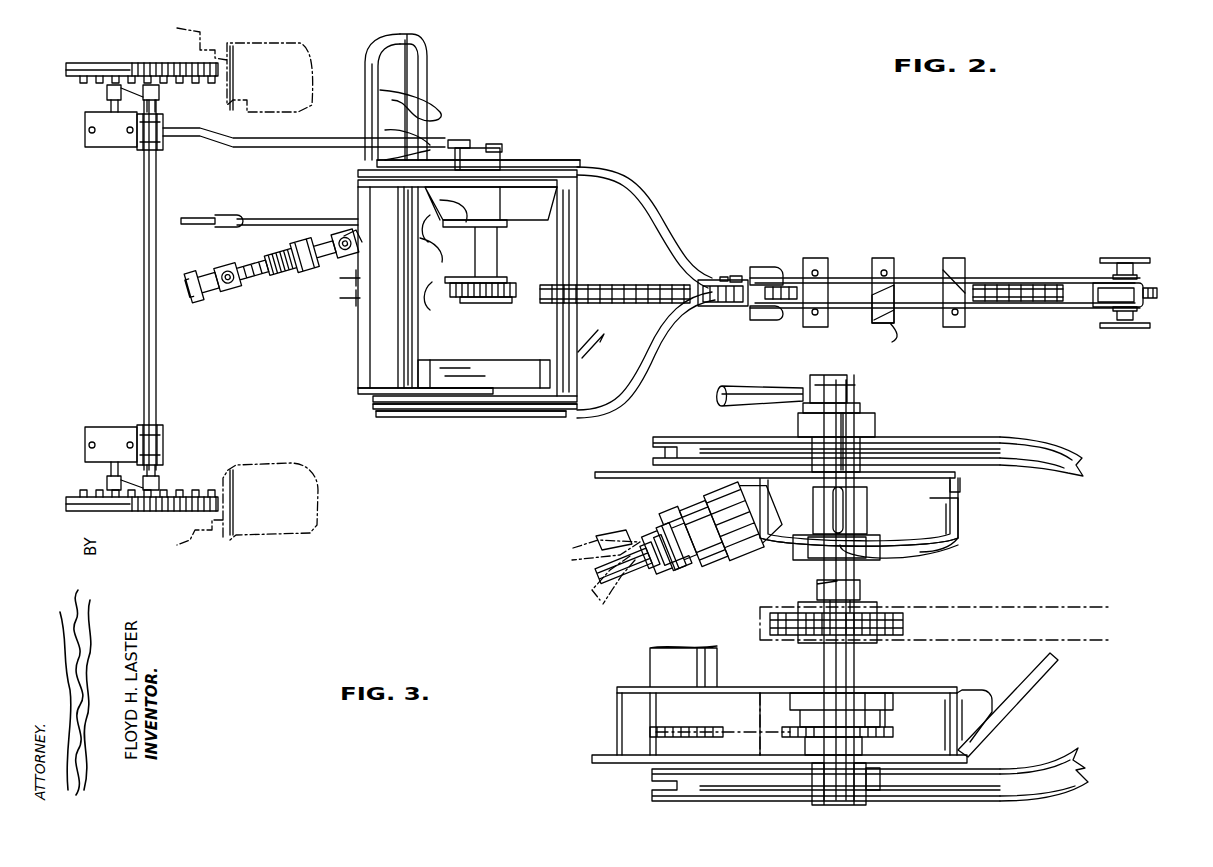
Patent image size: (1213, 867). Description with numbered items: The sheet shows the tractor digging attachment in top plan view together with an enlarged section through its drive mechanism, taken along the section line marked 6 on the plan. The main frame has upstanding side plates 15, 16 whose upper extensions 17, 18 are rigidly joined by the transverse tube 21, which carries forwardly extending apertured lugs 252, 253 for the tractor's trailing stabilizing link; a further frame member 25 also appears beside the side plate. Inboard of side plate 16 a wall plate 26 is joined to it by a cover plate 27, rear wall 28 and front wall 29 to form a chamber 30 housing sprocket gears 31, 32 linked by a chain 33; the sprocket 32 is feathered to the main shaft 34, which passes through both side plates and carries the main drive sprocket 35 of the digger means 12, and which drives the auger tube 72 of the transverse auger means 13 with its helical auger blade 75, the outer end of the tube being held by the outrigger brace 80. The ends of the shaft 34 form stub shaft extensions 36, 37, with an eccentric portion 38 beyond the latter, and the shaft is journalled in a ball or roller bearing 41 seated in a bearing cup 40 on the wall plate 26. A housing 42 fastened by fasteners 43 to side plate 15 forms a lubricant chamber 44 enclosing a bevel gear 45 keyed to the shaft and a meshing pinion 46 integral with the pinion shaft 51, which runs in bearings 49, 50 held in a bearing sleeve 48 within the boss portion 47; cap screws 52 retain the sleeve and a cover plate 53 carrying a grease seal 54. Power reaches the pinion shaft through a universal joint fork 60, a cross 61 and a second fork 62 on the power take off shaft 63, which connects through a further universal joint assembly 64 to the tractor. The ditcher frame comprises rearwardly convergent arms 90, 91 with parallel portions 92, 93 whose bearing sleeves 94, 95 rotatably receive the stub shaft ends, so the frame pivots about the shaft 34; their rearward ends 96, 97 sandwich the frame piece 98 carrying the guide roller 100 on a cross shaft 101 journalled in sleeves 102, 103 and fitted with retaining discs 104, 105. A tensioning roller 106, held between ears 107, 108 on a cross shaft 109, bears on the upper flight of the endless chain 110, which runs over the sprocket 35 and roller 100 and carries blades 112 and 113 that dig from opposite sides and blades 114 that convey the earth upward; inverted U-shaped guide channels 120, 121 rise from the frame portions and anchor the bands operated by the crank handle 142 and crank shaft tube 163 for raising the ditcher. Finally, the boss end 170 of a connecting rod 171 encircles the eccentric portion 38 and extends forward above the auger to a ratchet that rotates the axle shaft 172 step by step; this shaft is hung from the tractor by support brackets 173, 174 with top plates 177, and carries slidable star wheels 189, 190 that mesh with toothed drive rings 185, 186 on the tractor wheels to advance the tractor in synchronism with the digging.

In FIG. 2, the section line 6 is at (54, 152).
In FIG. 2, the digger means 12 is at (892, 249).
In FIG. 2, the transverse auger means 13 is at (434, 274).
In FIG. 2, the side plate 15 is at (514, 182).
In FIG. 3, the side plate 15 is at (912, 478).
In FIG. 2, the side plate 16 is at (522, 411).
In FIG. 3, the side plate 16 is at (918, 755).
In FIG. 2, the upper extension 17 is at (458, 180).
In FIG. 2, the upper extension 18 is at (450, 396).
In FIG. 2, the transversely extending tube or housing 21 is at (360, 352).
In FIG. 2, the brace bar 25 is at (598, 342).
In FIG. 3, the brace bar 25 is at (1050, 668).
In FIG. 2, the wall plate 26 is at (530, 360).
In FIG. 3, the wall plate 26 is at (900, 693).
In FIG. 2, the cover plate 27 is at (505, 360).
In FIG. 3, the rear wall 28 is at (992, 716).
In FIG. 3, the front wall 29 is at (618, 710).
In FIG. 3, the chamber 30 is at (745, 687).
In FIG. 3, the sprocket gear 31 is at (718, 727).
In FIG. 3, the sprocket gear 32 is at (896, 730).
In FIG. 3, the chain 33 is at (765, 693).
In FIG. 2, the shaft 34 is at (497, 252).
In FIG. 3, the shaft 34 is at (860, 586).
In FIG. 2, the sprocket 35 is at (505, 284).
In FIG. 3, the sprocket 35 is at (898, 618).
In FIG. 3, the stub shaft extension 36 is at (806, 770).
In FIG. 3, the stub shaft extension 37 is at (848, 450).
In FIG. 2, the eccentric portion 38 is at (945, 293).
In FIG. 3, the eccentric portion 38 is at (836, 375).
In FIG. 3, the bearing cup or seat 40 is at (870, 693).
In FIG. 3, the ball or roller bearing 41 is at (810, 698).
In FIG. 2, the housing 42 is at (445, 228).
In FIG. 3, the housing 42 is at (935, 540).
In FIG. 3, the fasteners 43 is at (960, 476).
In FIG. 3, the chamber 44 is at (944, 508).
In FIG. 3, the crown or bevel gear 45 is at (786, 548).
In FIG. 3, the pinion 46 is at (760, 500).
In FIG. 3, the boss portion 47 is at (715, 566).
In FIG. 3, the bearing sleeve 48 is at (680, 500).
In FIG. 3, the roller or ball bearing 49 is at (676, 560).
In FIG. 3, the roller or ball bearing 50 is at (752, 516).
In FIG. 3, the pinion shaft 51 is at (630, 538).
In FIG. 3, the cap screws 52 is at (652, 520).
In FIG. 3, the cover plate 53 is at (650, 548).
In FIG. 3, the grease seal 54 is at (656, 530).
In FIG. 2, the universal joint fork 60 is at (357, 228).
In FIG. 3, the universal joint fork 60 is at (620, 580).
In FIG. 2, the universal joint cross 61 is at (356, 248).
In FIG. 2, the universal joint fork 62 is at (318, 262).
In FIG. 2, the power take off shaft 63 is at (258, 278).
In FIG. 2, the universal joint assembly 64 is at (238, 304).
In FIG. 2, the auger tube or shaft 72 is at (427, 58).
In FIG. 2, the auger blade 75 is at (446, 104).
In FIG. 2, the outrigger brace 80 is at (368, 74).
In FIG. 2, the rearwardly convergent arm 90 is at (640, 202).
In FIG. 3, the rearwardly convergent arm 90 is at (1062, 440).
In FIG. 2, the rearwardly convergent arm 91 is at (655, 342).
In FIG. 3, the rearwardly convergent arm 91 is at (1080, 762).
In FIG. 3, the laterally spaced parallel portion 92 is at (912, 436).
In FIG. 3, the laterally spaced parallel portion 93 is at (975, 775).
In FIG. 3, the bearing sleeve 94 is at (810, 440).
In FIG. 3, the bearing sleeve 95 is at (876, 768).
In FIG. 2, the rearward end 96 is at (772, 268).
In FIG. 2, the rearward end 97 is at (758, 312).
In FIG. 2, the rearwardly extending frame piece 98 is at (1020, 284).
In FIG. 2, the guide roller 100 is at (1158, 293).
In FIG. 2, the cross shaft 101 is at (1134, 318).
In FIG. 2, the sleeve 102 is at (1134, 268).
In FIG. 2, the sleeve 103 is at (1118, 310).
In FIG. 2, the lateral retaining disc 104 is at (1132, 258).
In FIG. 2, the lateral retaining disc 105 is at (1138, 328).
In FIG. 2, the guide and tensioning roller 106 is at (708, 280).
In FIG. 2, the ear 107 is at (733, 304).
In FIG. 2, the ear 108 is at (740, 280).
In FIG. 2, the cross shaft 109 is at (724, 276).
In FIG. 2, the endless chain 110 is at (612, 284).
In FIG. 2, the blades 112 is at (958, 258).
In FIG. 2, the blades 113 is at (892, 330).
In FIG. 2, the blades 114 is at (830, 266).
In FIG. 2, the inverted U-shaped guide channel 120 is at (560, 168).
In FIG. 3, the inverted U-shaped guide channel 120 is at (664, 438).
In FIG. 2, the inverted U-shaped guide channel 121 is at (552, 412).
In FIG. 3, the inverted U-shaped guide channel 121 is at (660, 790).
In FIG. 2, the offset handle 142 is at (200, 216).
In FIG. 2, the crank shaft tube 163 is at (292, 218).
In FIG. 2, the boss end 170 is at (490, 148).
In FIG. 3, the boss end 170 is at (860, 398).
In FIG. 2, the connecting rod 171 is at (320, 137).
In FIG. 3, the connecting rod 171 is at (760, 388).
In FIG. 2, the axle shaft 172 is at (157, 360).
In FIG. 2, the support bracket 173 is at (90, 154).
In FIG. 2, the support bracket 174 is at (101, 418).
In FIG. 2, the top plate 177 is at (120, 140).
In FIG. 2, the drive gear or ring 185 is at (128, 54).
In FIG. 2, the drive gear or ring 186 is at (145, 520).
In FIG. 2, the drive gear or star wheel 189 is at (160, 94).
In FIG. 2, the drive gear or star wheel 190 is at (160, 480).
In FIG. 2, the forwardly extending lug 252 is at (355, 300).
In FIG. 2, the forwardly extending lug 253 is at (360, 278).